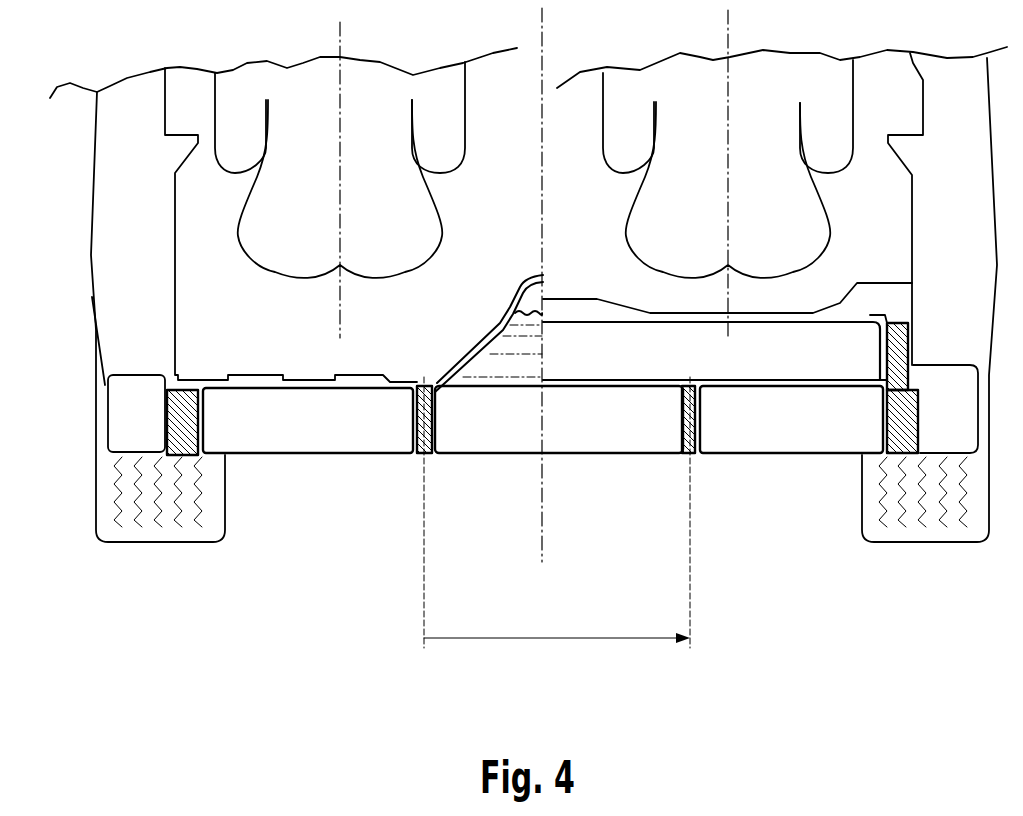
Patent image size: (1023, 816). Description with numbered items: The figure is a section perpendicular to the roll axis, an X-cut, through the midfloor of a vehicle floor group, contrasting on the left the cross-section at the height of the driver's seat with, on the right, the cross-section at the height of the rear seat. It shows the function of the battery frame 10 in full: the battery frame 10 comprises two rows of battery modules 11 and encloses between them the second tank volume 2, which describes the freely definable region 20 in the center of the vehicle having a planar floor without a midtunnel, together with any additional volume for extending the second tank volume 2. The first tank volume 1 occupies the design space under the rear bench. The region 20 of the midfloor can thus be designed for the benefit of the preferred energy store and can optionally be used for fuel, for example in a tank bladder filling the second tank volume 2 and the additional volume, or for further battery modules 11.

The first tank volume 1 is at (787, 355).
The second tank volume 2 is at (602, 418).
The battery frame 10 is at (183, 420).
The battery modules 11 is at (257, 420).
The region 20 is at (553, 640).